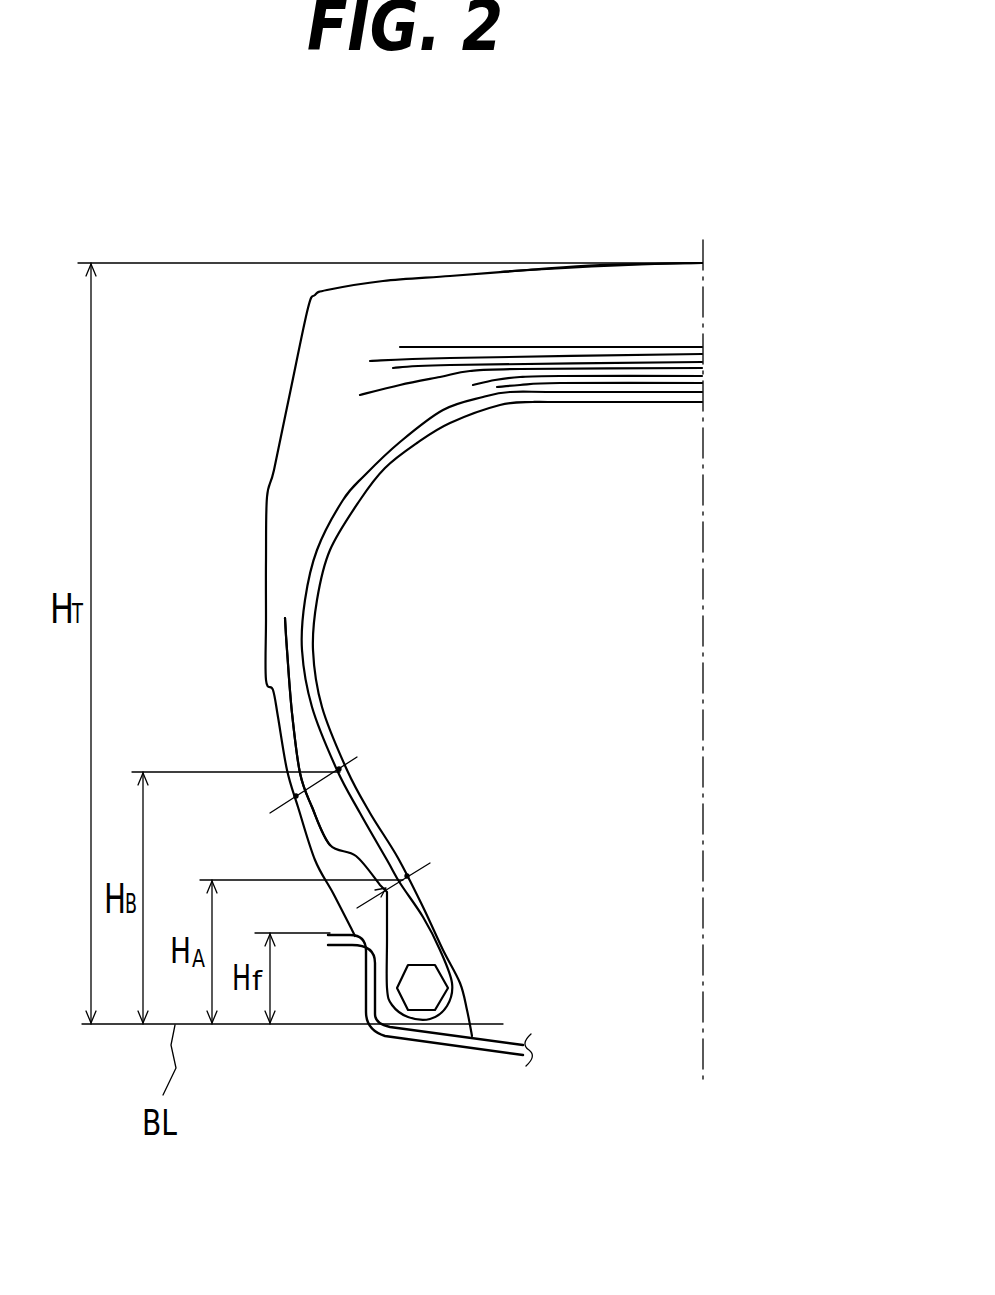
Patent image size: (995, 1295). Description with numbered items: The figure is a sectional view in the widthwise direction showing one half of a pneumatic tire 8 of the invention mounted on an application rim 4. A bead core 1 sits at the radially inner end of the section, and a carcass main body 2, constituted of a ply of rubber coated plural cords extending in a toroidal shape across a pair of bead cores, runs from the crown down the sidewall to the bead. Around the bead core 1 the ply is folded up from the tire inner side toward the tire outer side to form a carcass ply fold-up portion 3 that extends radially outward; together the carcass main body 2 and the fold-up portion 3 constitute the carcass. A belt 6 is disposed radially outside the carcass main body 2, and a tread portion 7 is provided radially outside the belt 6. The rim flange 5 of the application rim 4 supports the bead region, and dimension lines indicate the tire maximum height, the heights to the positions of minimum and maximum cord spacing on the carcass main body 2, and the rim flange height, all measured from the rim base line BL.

The bead core 1 is at (425, 987).
The carcass main body 2 is at (420, 908).
The carcass ply fold-up portion 3 is at (330, 820).
The application rim 4 is at (460, 1055).
The rim flange 5 is at (370, 982).
The belt 6 is at (352, 337).
The tread portion 7 is at (515, 297).
The tire 8 is at (637, 235).